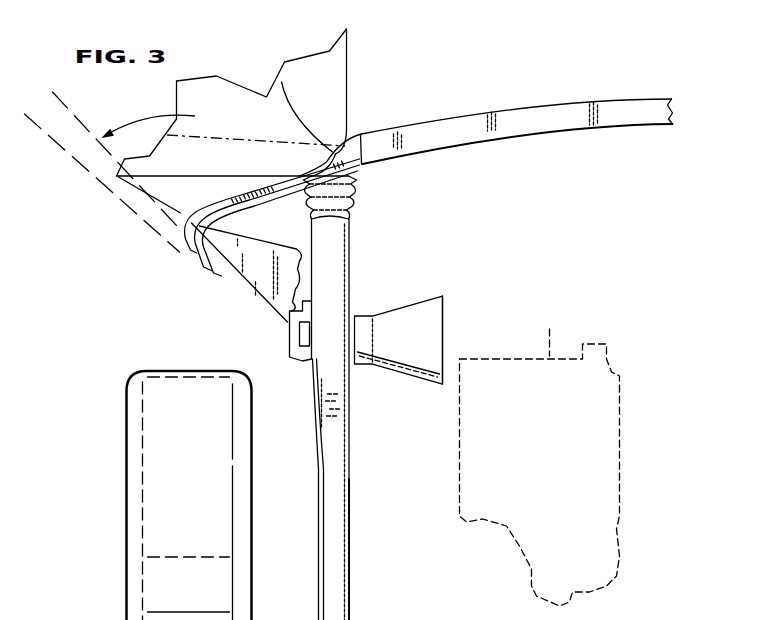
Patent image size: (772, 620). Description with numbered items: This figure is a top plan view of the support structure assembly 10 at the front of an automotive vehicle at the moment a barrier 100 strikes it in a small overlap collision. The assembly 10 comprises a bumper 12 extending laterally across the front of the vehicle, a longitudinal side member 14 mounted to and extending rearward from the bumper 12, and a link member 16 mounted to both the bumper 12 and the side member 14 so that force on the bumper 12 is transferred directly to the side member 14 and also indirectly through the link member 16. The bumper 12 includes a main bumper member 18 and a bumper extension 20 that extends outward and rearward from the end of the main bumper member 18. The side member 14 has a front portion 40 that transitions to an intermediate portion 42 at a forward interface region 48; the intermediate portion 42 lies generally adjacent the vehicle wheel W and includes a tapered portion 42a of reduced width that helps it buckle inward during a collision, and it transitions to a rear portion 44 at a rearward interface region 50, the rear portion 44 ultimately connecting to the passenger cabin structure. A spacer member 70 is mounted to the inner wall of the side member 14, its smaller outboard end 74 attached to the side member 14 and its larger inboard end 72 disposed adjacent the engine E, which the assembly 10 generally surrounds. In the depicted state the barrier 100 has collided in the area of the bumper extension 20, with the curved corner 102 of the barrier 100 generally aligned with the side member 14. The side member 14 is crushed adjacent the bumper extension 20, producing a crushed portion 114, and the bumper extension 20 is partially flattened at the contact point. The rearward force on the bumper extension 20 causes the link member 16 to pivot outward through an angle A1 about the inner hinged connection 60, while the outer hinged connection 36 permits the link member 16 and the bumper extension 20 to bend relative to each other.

The support structure assembly 10 is at (688, 67).
The bumper 12 is at (526, 88).
The longitudinal side member 14 is at (283, 403).
The link member 16 is at (255, 277).
The main bumper member 18 is at (612, 100).
The bumper extension 20 is at (197, 203).
The outer hinged connection 36 is at (160, 256).
The front portion 40 is at (340, 242).
The intermediate portion 42 is at (340, 395).
The tapered portion 42a is at (320, 423).
The rear portion 44 is at (318, 480).
The forward interface region 48 is at (326, 370).
The rearward interface region 50 is at (366, 474).
The inner hinged connection 60 is at (273, 341).
The spacer member 70 is at (433, 298).
The inboard end 72 is at (447, 313).
The outboard end 74 is at (363, 318).
The barrier 100 is at (338, 95).
The curved corner 102 is at (282, 83).
The crushed portion 114 is at (363, 197).
The angle A1 is at (63, 243).
The engine E is at (550, 330).
The vehicle wheel W is at (132, 465).